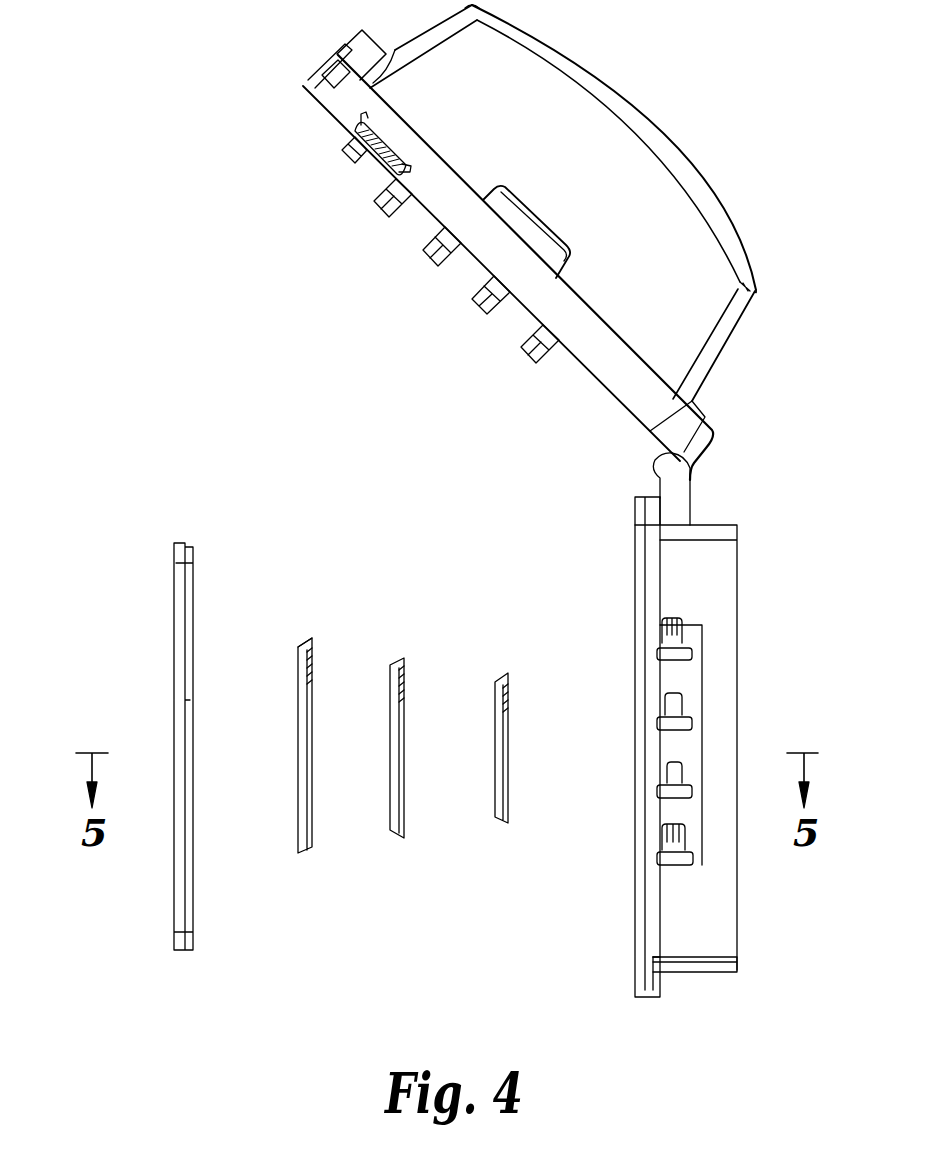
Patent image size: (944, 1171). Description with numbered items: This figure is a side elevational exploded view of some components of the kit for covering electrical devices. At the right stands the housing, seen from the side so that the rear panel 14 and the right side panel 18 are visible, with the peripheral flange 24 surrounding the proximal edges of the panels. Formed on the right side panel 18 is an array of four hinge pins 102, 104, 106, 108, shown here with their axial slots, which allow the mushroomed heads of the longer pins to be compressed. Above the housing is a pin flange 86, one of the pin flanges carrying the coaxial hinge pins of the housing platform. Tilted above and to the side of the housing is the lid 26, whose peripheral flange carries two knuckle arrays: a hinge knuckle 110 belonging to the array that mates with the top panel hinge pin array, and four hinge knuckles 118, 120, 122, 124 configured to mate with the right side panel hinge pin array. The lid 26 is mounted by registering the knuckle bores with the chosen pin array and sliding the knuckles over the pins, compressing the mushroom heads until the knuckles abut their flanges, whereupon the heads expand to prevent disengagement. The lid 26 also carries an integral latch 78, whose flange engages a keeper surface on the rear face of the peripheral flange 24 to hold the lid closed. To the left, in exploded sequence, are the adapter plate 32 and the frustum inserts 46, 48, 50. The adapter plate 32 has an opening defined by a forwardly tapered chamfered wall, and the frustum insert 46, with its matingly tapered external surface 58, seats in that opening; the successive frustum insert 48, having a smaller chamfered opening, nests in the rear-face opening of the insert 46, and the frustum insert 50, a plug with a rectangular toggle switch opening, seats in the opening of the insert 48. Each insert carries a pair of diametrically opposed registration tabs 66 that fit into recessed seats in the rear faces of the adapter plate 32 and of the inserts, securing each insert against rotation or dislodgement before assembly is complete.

The rear panel 14 is at (737, 618).
The right side panel 18 is at (712, 572).
The peripheral flange 24 is at (640, 950).
The lid 26 is at (675, 152).
The adapter plate 32 is at (170, 565).
The frustum insert 46 is at (308, 852).
The frustum insert 48 is at (400, 832).
The frustum insert 50 is at (506, 820).
The tapered external surface 58 is at (300, 645).
The registration tabs 66 is at (312, 663).
The latch 78 is at (348, 143).
The pin flange 86 is at (683, 490).
The hinge pin 102 is at (682, 637).
The hinge pin 104 is at (682, 710).
The hinge pin 106 is at (667, 783).
The hinge pin 108 is at (685, 845).
The hinge knuckle 110 is at (708, 460).
The hinge knuckle 118 is at (535, 362).
The hinge knuckle 120 is at (486, 313).
The hinge knuckle 122 is at (437, 264).
The hinge knuckle 124 is at (388, 215).